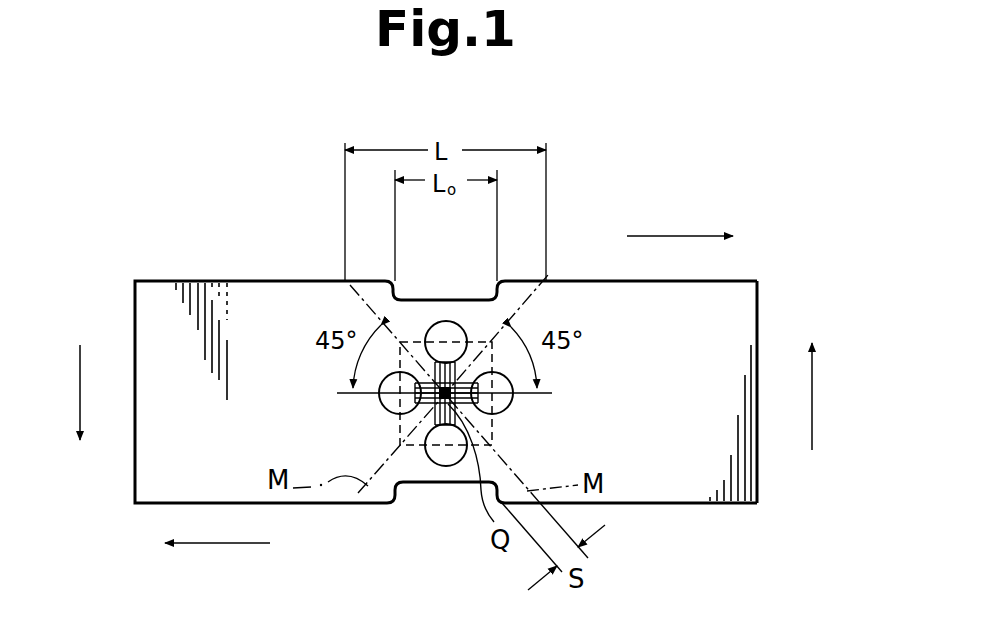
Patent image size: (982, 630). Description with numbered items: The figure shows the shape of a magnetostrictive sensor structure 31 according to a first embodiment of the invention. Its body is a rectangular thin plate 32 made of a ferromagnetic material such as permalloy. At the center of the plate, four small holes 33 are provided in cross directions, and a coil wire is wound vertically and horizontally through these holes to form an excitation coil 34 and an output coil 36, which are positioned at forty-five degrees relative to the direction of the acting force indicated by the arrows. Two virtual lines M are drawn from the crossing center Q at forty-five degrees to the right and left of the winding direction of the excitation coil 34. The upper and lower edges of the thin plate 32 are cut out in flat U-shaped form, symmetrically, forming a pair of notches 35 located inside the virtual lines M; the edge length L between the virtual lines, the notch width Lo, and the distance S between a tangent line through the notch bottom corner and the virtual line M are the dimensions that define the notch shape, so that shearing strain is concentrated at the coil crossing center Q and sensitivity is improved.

The magnetostrictive sensor structure 31 is at (288, 272).
The thin plate 32 is at (740, 322).
The small holes 33 is at (461, 331).
The excitation coil 34 is at (491, 408).
The notches 35 is at (446, 287).
The output coil 36 is at (416, 406).